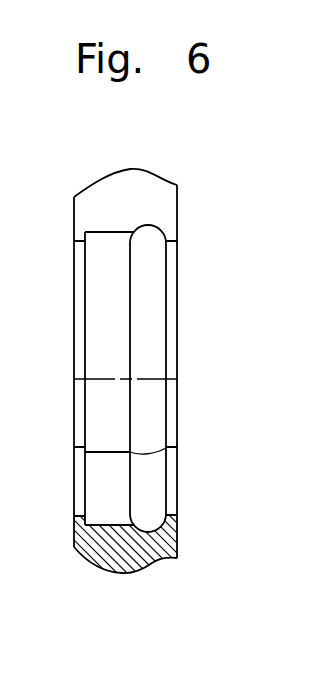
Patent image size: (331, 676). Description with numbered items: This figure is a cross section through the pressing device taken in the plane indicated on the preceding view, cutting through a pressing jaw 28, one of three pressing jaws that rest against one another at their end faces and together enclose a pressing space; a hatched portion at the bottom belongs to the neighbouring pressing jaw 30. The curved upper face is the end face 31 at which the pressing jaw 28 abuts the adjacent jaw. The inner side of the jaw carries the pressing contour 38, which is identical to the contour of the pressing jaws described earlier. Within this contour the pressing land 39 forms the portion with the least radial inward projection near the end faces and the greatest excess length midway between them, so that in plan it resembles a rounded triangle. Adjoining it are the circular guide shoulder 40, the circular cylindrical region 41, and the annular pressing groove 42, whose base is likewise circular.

The pressing jaw 28 is at (98, 181).
The end face 31 is at (143, 198).
The pressing contour 38 is at (178, 254).
The annular pressing groove 42 is at (148, 304).
The pressing land 39 is at (80, 345).
The cylindrical region 41 is at (113, 393).
The guide shoulder 40 is at (173, 430).
The pressing jaw 30 is at (147, 567).